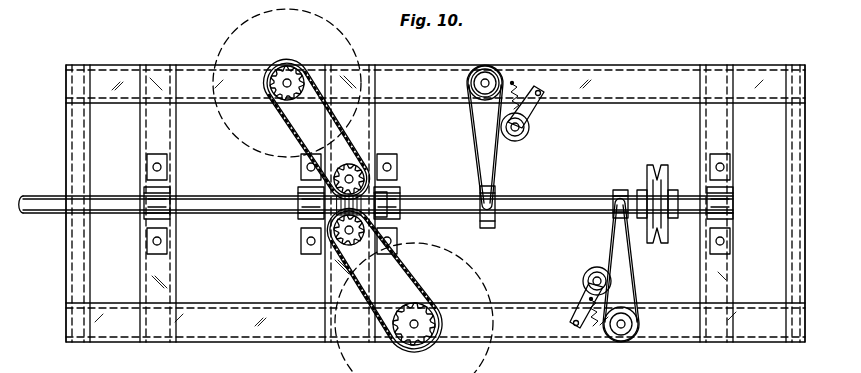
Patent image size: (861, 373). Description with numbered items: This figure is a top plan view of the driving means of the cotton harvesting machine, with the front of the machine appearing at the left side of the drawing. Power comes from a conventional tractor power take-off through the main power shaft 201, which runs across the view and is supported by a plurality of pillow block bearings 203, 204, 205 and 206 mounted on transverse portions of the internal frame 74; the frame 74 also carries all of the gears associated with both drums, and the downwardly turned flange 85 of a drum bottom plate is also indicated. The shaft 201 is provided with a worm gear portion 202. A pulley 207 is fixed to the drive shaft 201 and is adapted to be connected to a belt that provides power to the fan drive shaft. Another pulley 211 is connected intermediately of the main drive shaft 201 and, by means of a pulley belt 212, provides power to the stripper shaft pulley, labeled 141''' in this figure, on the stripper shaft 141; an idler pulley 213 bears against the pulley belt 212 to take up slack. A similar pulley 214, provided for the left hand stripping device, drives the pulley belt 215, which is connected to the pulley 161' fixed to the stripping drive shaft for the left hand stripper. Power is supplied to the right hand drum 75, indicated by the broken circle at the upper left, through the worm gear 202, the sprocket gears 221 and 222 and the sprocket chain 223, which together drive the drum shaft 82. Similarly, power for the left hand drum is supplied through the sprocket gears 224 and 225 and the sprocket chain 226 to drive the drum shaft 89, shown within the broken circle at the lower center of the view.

The internal frame 74 is at (690, 80).
The right hand drum 75 is at (205, 37).
The drum shaft 82 is at (289, 76).
The downwardly turned flange 85 is at (435, 219).
The axle 89 is at (414, 330).
The stripper shaft 141 is at (563, 189).
The pulley 141''' is at (513, 65).
The pulley 161' is at (610, 320).
The main power shaft 201 is at (46, 199).
The worm gear portion 202 is at (390, 206).
The pillow block bearing 203 is at (170, 186).
The pillow block bearing 204 is at (298, 184).
The pillow block bearing 205 is at (392, 178).
The pillow block bearing 206 is at (724, 198).
The pulley 207 is at (650, 185).
The pulley 211 is at (497, 188).
The pulley belt 212 is at (492, 162).
The idler pulley 213 is at (530, 130).
The pulley 214 is at (611, 220).
The pulley belt 215 is at (632, 272).
The sprocket gear 221 is at (356, 176).
The sprocket gear 222 is at (298, 79).
The sprocket chain 223 is at (330, 118).
The sprocket gear 224 is at (340, 244).
The sprocket gear 225 is at (400, 345).
The sprocket chain 226 is at (405, 278).